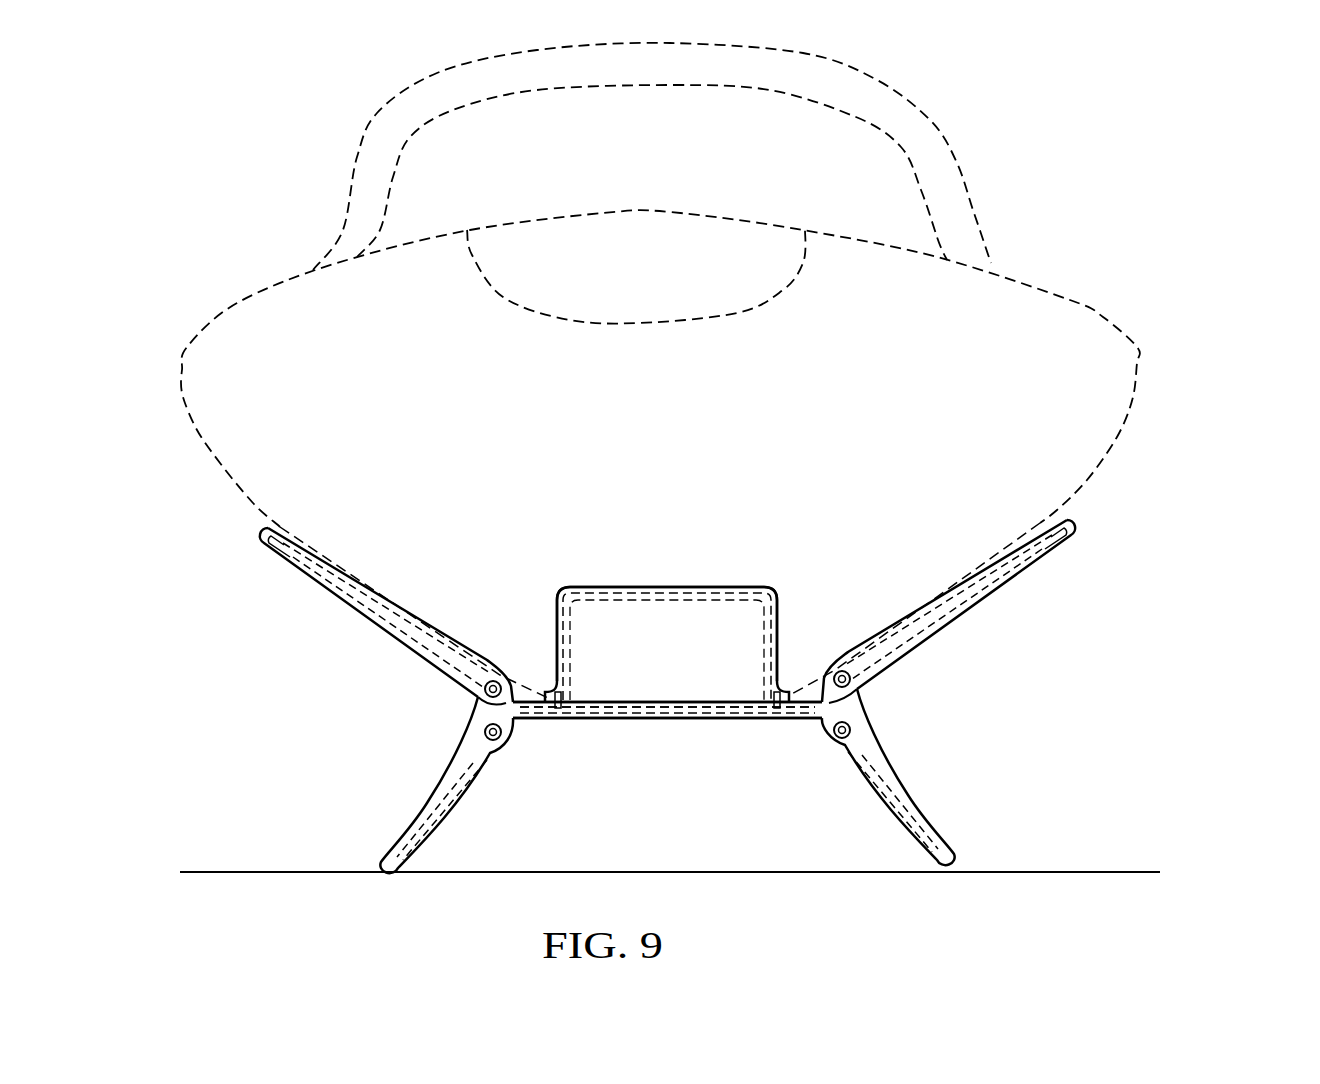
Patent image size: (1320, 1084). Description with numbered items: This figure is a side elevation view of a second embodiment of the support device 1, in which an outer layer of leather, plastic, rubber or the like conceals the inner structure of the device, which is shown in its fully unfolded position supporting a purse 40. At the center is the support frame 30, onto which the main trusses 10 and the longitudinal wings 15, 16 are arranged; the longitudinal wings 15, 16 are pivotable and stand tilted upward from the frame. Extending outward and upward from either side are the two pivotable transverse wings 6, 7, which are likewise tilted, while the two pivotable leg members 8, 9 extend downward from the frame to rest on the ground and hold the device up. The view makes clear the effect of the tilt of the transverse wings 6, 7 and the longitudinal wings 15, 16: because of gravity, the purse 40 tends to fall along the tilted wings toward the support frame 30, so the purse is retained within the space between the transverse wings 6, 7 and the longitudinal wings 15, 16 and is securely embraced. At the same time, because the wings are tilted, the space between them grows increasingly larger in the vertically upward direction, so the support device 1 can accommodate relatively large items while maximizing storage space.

The support device 1 is at (1147, 700).
The pivotable transverse wing 6 is at (346, 628).
The pivotable transverse wing 7 is at (1023, 598).
The pivotable leg member 8 is at (409, 783).
The pivotable leg member 9 is at (929, 779).
The main truss 10 is at (653, 774).
The pivotable longitudinal wing 15 is at (686, 700).
The pivotable longitudinal wing 16 is at (680, 619).
The support frame 30 is at (653, 734).
The purse 40 is at (1097, 309).